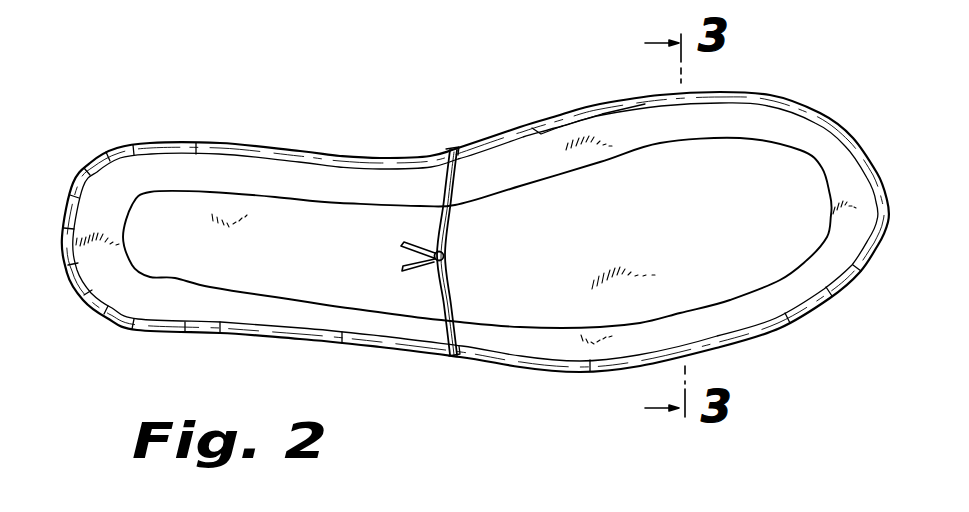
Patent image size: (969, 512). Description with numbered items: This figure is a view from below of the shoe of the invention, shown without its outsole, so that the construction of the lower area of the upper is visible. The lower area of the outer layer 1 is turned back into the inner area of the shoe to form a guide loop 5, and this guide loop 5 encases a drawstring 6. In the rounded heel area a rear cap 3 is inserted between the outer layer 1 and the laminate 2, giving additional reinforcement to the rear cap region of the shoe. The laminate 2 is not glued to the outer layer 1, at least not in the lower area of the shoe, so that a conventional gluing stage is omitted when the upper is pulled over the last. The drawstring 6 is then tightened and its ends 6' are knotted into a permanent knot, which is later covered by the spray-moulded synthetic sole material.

The outer layer 1 is at (152, 142).
The laminate 2 is at (285, 187).
The rear cap 3 is at (218, 142).
The guide loop 5 is at (522, 140).
The drawstring 6 is at (437, 274).
The ends of the drawstring 6' is at (415, 183).